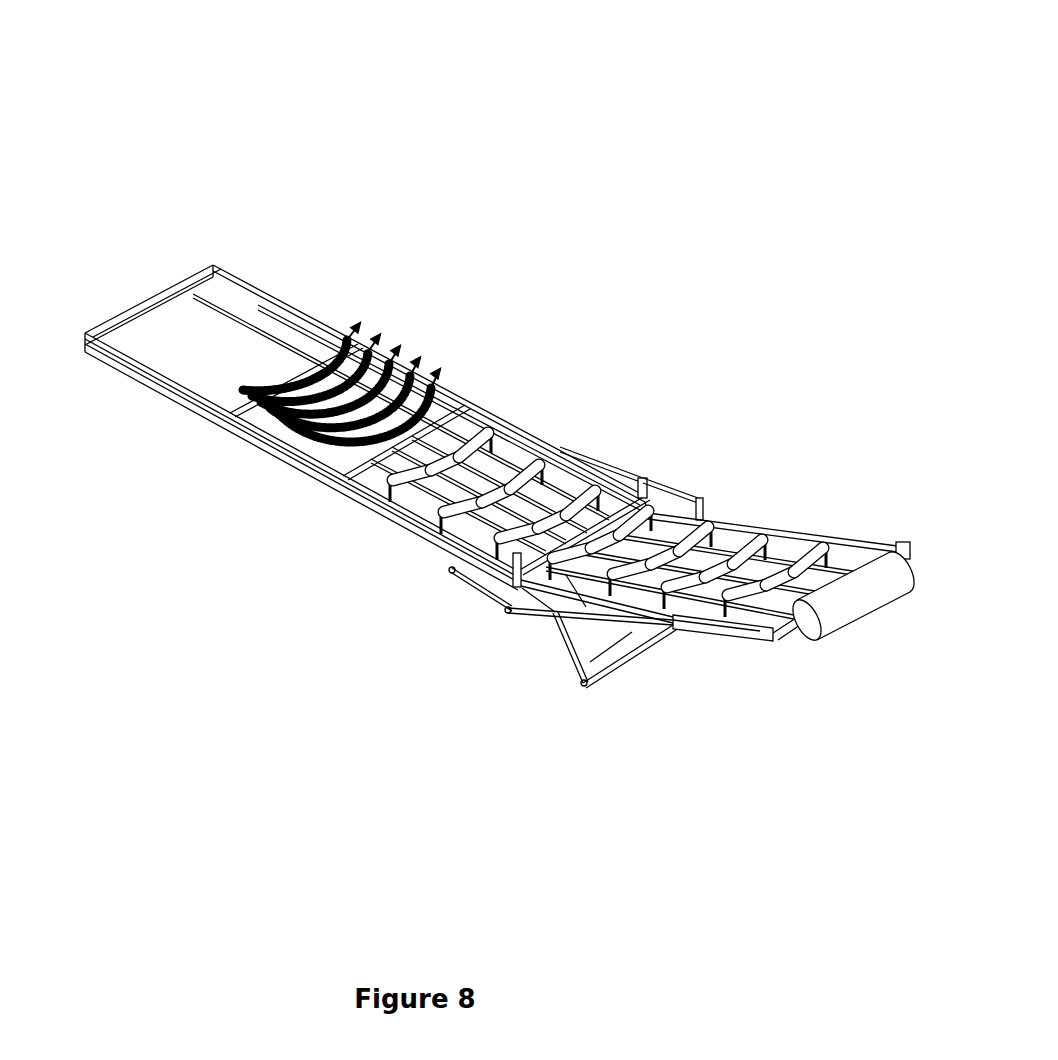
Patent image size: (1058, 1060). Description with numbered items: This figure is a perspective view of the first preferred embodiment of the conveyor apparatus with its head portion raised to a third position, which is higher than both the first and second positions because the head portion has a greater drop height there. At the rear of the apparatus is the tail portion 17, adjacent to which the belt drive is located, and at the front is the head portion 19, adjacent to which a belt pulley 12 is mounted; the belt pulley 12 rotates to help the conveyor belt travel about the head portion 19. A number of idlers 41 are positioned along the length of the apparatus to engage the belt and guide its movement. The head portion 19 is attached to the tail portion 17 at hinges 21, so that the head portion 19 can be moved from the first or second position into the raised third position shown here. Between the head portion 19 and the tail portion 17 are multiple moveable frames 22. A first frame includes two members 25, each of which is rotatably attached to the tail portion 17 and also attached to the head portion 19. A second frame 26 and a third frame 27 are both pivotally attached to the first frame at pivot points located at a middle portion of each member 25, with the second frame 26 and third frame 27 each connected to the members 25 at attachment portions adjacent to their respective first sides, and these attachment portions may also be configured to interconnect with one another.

The tail portion 17 is at (326, 223).
The third frame 27 is at (524, 370).
The idlers 41 is at (472, 443).
The moveable frames 22 is at (649, 442).
The second frame 26 is at (694, 468).
The head portion 19 is at (782, 477).
The belt pulley 12 is at (860, 598).
The hinges 21 is at (543, 612).
The members 25 is at (517, 620).